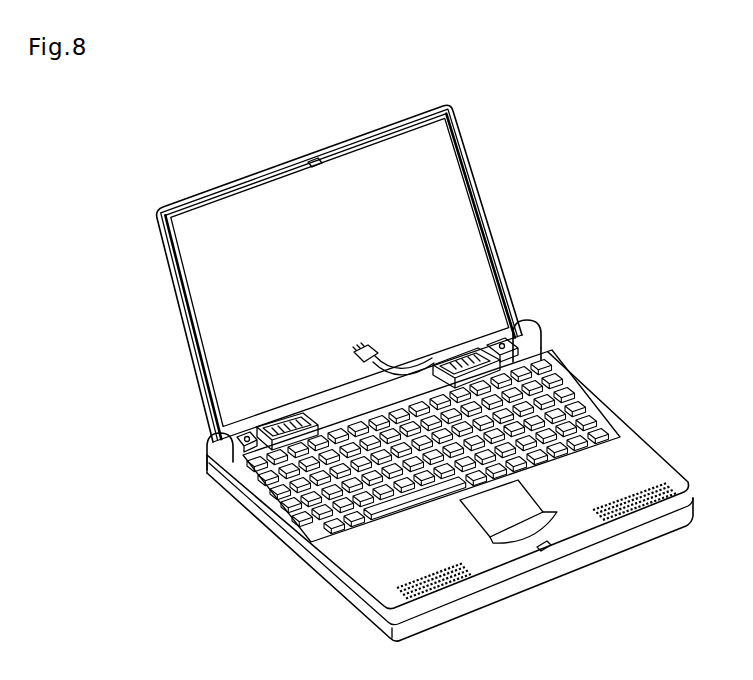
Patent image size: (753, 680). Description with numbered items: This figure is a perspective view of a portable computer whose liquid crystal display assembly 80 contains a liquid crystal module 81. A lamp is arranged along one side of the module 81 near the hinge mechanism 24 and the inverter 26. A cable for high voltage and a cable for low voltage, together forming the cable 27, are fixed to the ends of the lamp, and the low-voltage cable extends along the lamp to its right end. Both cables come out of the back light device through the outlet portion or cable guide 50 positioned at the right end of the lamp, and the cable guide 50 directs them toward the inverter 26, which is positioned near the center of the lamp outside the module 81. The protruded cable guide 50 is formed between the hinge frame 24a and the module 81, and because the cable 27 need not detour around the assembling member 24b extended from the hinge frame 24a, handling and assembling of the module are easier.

The liquid crystal display assembly 80 is at (335, 130).
The liquid crystal module 81 is at (478, 183).
The cable 27 is at (403, 362).
The hinge mechanism 24 is at (478, 334).
The hinge frame 24a is at (540, 345).
The assembling member 24b is at (537, 333).
The outlet portion or cable guide 50 is at (518, 315).
The inverter 26 is at (350, 403).